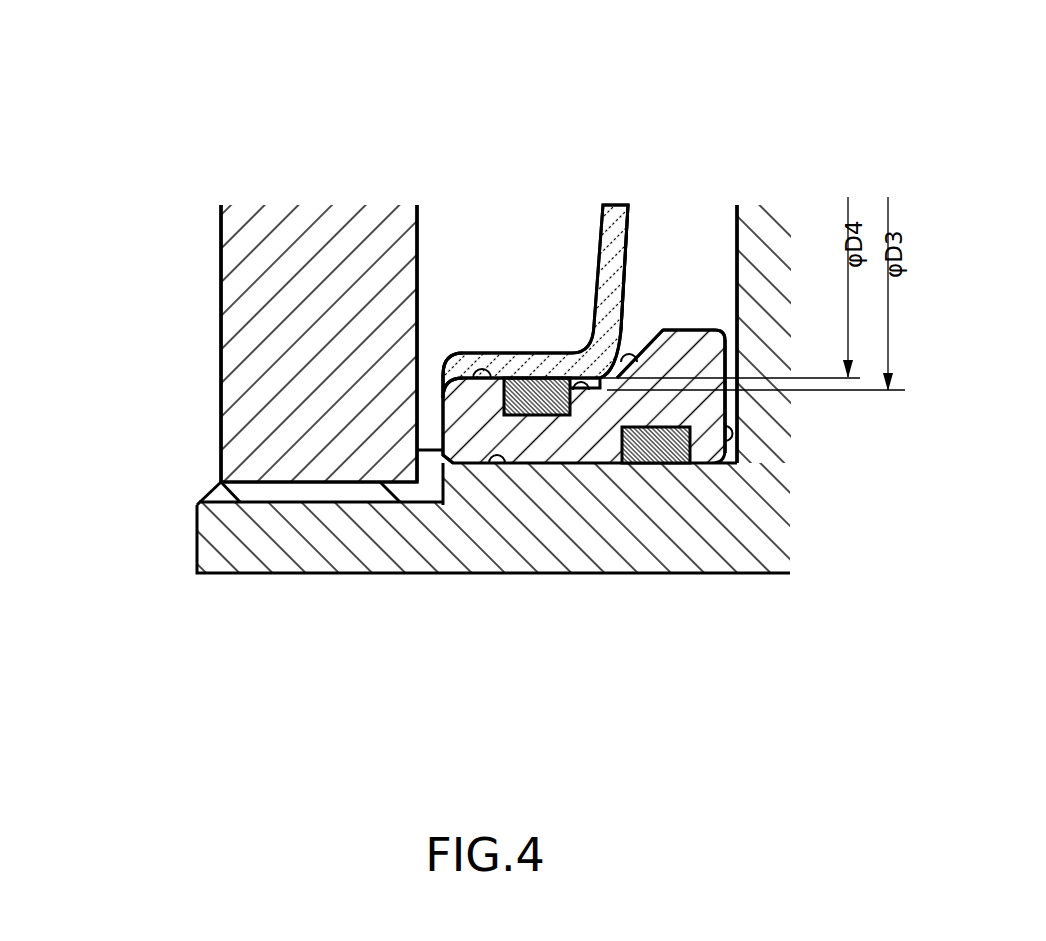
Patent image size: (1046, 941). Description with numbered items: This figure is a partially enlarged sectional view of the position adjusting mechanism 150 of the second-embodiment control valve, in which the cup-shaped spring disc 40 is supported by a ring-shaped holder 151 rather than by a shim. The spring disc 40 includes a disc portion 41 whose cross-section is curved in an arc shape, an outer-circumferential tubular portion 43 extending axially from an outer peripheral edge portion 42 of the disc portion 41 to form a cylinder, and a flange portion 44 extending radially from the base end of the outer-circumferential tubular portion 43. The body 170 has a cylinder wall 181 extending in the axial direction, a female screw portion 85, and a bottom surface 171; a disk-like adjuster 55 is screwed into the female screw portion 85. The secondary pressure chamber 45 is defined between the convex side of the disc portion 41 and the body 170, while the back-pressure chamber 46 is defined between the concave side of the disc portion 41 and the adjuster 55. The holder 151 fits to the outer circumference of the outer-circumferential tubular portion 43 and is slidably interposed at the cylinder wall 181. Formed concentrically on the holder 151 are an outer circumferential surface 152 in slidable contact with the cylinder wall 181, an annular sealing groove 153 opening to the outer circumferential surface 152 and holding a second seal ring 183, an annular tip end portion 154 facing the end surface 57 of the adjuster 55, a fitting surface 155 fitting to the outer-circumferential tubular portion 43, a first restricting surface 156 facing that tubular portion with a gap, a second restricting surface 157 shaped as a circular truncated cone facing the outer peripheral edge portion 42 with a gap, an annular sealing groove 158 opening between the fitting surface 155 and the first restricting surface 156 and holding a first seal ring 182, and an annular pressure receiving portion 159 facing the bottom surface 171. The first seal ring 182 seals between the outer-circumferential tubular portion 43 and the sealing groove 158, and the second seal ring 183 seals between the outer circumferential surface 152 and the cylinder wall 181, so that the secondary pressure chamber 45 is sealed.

The position adjusting mechanism 150 is at (208, 182).
The end surface of the adjuster 57 is at (415, 253).
The adjuster 55 is at (278, 262).
The female screw portion 85 is at (200, 500).
The back-pressure chamber 46 is at (447, 267).
The spring disc 40 is at (443, 78).
The flange portion 44 is at (433, 400).
The outer-circumferential tubular portion 43 is at (517, 378).
The disc portion 41 is at (612, 236).
The outer peripheral edge portion 42 is at (622, 357).
The secondary pressure chamber 45 is at (697, 283).
The bottom surface of the body 171 is at (737, 258).
The body 170 is at (765, 265).
The holder 151 is at (594, 489).
The annular tip end portion 154 is at (440, 455).
The fitting surface 155 is at (475, 390).
The outer circumferential surface 152 is at (512, 420).
The annular sealing groove 158 is at (519, 380).
The first restricting surface 156 is at (583, 392).
The second restricting surface 157 is at (626, 440).
The annular sealing groove 153 is at (688, 390).
The annular pressure receiving portion 159 is at (724, 385).
The cylinder wall 181 is at (497, 458).
The first seal ring 182 is at (550, 416).
The second seal ring 183 is at (671, 544).